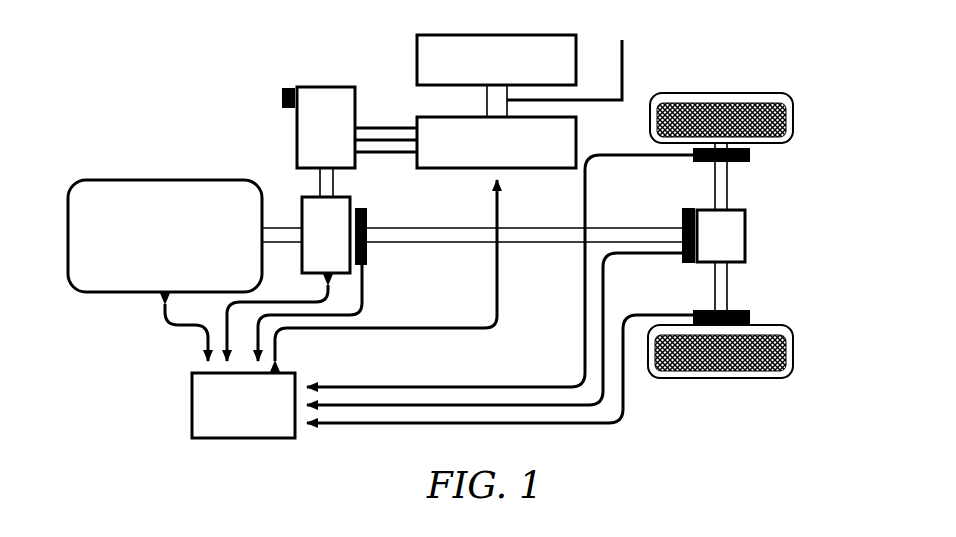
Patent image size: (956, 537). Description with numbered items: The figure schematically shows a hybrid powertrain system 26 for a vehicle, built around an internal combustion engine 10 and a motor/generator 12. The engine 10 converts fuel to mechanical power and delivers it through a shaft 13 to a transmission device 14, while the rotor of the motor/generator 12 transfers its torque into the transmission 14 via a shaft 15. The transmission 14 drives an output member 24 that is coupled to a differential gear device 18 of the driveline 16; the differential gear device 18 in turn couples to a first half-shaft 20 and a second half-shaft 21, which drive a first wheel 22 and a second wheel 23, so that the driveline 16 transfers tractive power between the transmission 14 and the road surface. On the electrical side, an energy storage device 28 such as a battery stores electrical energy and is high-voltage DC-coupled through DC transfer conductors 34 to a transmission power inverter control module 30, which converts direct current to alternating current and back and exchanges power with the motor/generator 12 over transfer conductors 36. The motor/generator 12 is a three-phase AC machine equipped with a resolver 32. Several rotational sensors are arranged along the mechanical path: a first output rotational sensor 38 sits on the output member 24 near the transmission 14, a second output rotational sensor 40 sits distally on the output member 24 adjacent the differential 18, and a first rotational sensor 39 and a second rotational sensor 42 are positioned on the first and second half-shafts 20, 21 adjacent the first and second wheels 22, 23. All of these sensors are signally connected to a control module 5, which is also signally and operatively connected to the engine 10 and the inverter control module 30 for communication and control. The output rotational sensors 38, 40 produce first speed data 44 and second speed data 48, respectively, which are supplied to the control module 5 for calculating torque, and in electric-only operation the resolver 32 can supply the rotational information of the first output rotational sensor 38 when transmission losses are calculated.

The control module 5 is at (243, 405).
The internal combustion engine 10 is at (165, 236).
The motor/generator 12 is at (326, 127).
The shaft 13 is at (282, 228).
The transmission device 14 is at (326, 235).
The shaft 15 is at (340, 187).
The driveline 16 is at (636, 283).
The differential gear device 18 is at (721, 236).
The first half-shaft 20 is at (730, 175).
The second half-shaft 21 is at (730, 295).
The first wheel 22 is at (752, 93).
The second wheel 23 is at (750, 378).
The output member 24 is at (553, 243).
The hybrid powertrain system 26 is at (252, 135).
The energy storage device 28 is at (496, 76).
The transmission power inverter control module 30 is at (496, 142).
The resolver 32 is at (283, 95).
The DC transfer conductors 34 is at (571, 58).
The transfer conductors 36 is at (373, 128).
The first output rotational sensor 38 is at (370, 218).
The first rotational sensor 39 is at (752, 153).
The second output rotational sensor 40 is at (680, 262).
The second rotational sensor 42 is at (752, 318).
The first speed data 44 is at (362, 283).
The second speed data 48 is at (623, 390).